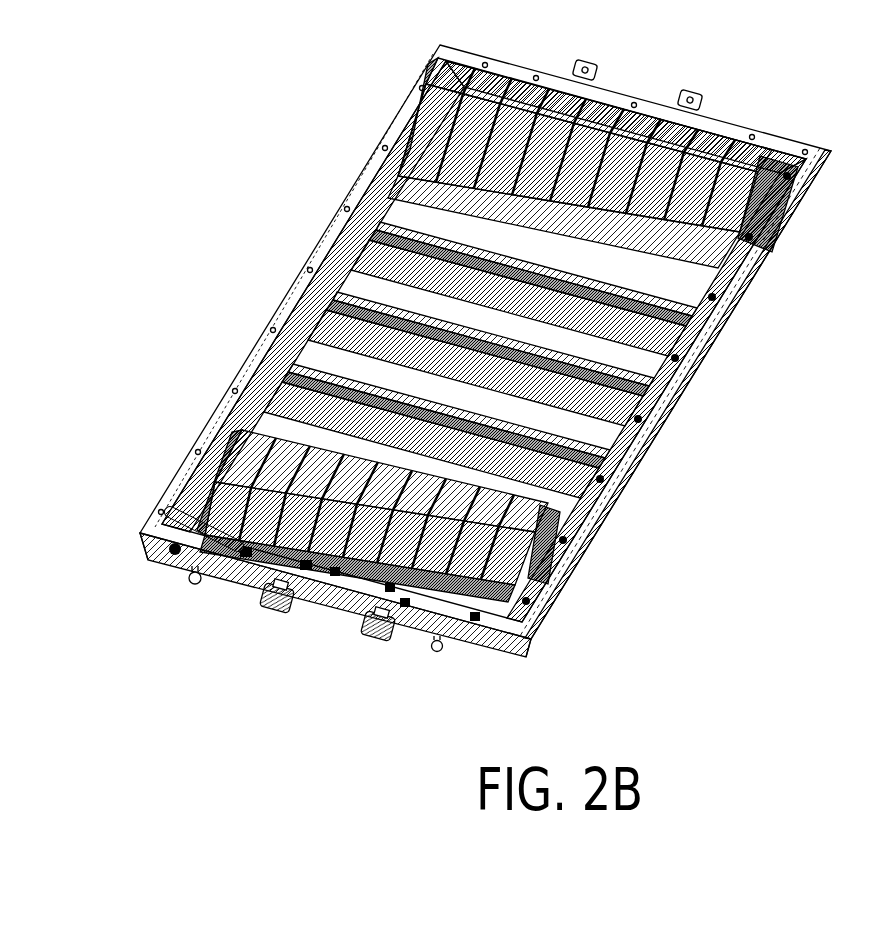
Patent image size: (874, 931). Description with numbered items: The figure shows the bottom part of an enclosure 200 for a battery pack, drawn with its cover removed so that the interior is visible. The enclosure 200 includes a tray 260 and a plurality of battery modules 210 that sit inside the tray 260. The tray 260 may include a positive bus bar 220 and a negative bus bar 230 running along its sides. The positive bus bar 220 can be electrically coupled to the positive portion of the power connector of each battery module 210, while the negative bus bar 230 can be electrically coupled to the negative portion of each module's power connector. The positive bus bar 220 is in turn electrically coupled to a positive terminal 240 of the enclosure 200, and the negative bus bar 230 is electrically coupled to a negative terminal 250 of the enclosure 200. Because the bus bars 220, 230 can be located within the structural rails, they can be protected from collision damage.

The enclosure 200 is at (192, 90).
The battery module 210 is at (442, 46).
The positive bus bar 220 is at (292, 346).
The negative bus bar 230 is at (655, 384).
The positive terminal 240 is at (195, 586).
The negative terminal 250 is at (437, 652).
The tray 260 is at (337, 179).